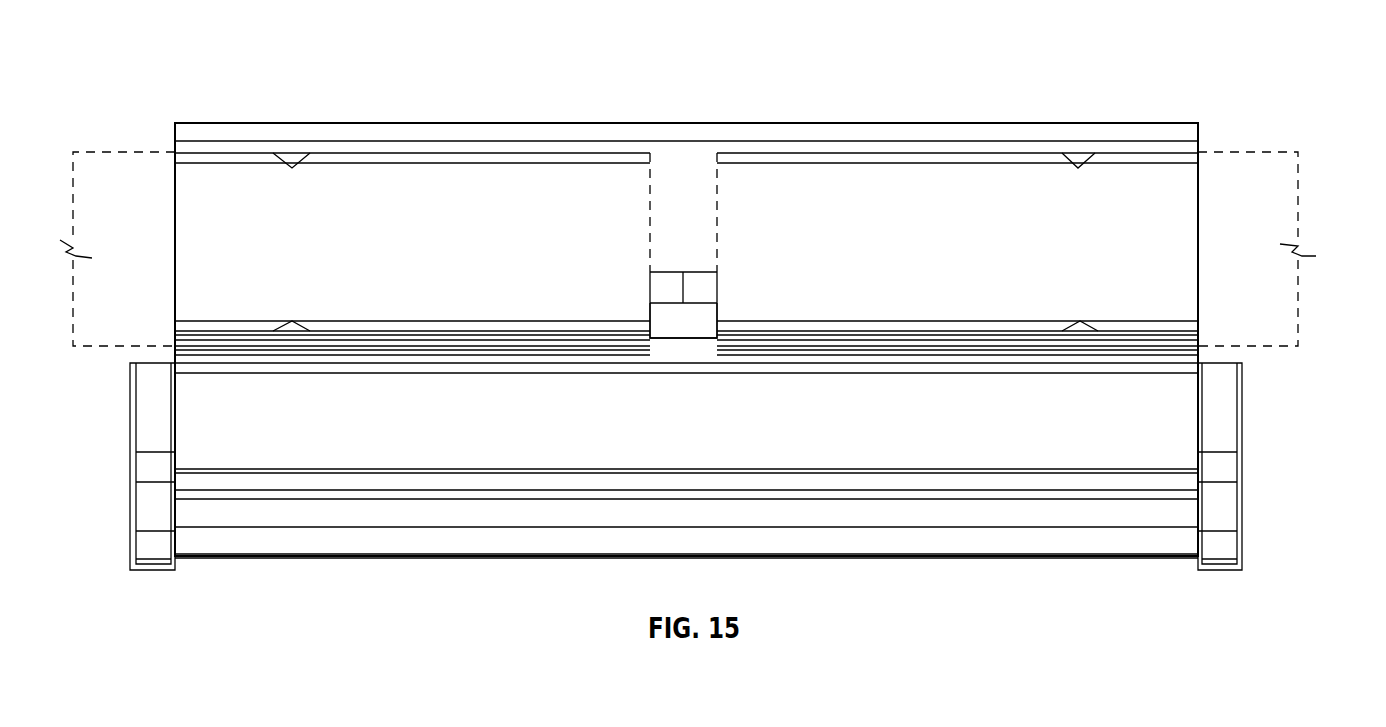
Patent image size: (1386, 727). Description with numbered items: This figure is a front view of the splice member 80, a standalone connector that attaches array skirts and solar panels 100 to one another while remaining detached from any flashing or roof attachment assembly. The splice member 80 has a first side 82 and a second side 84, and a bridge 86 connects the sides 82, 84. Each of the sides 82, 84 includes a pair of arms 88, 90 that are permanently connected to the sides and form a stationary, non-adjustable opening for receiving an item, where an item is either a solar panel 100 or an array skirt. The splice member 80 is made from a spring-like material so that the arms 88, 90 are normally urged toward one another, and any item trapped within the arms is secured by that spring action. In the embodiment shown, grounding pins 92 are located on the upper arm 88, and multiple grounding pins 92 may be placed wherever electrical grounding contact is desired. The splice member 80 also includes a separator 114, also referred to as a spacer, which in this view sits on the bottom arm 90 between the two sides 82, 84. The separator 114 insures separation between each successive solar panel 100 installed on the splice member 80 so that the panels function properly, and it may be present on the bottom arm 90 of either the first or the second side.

The splice member 80 is at (1284, 110).
The first side 82 is at (310, 122).
The second side 84 is at (1145, 138).
The bridge 86 is at (175, 330).
The arm 88 is at (220, 132).
The arm 90 is at (1192, 330).
The grounding pin 92 is at (292, 170).
The solar panel 100 is at (123, 151).
The separator 114 is at (700, 293).